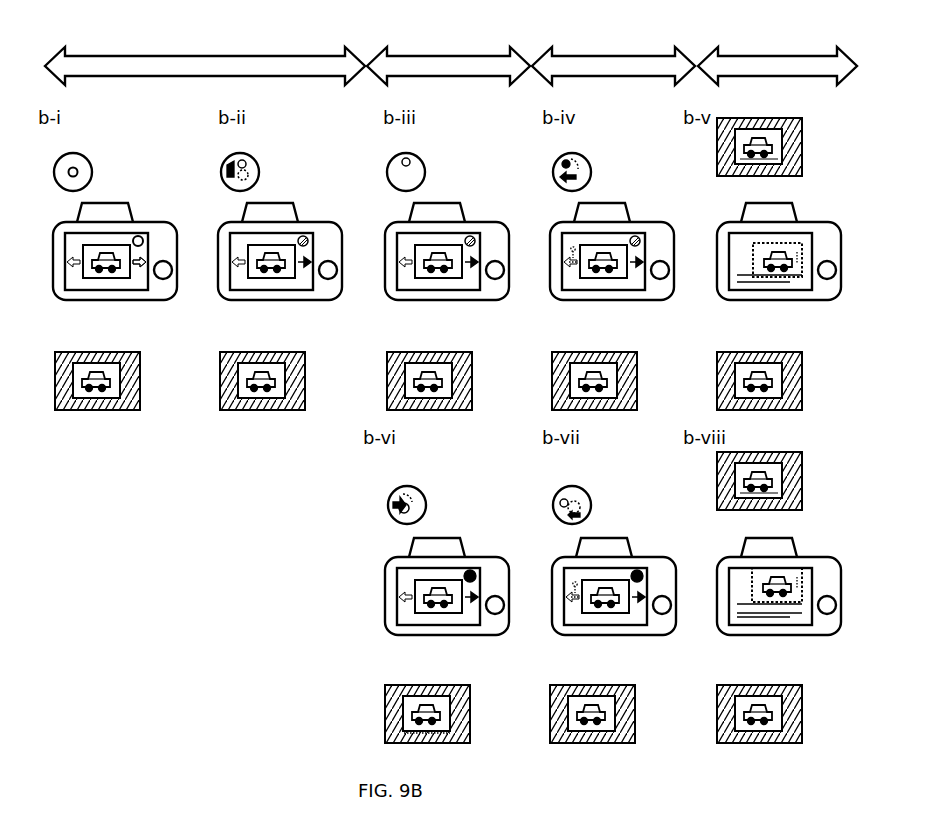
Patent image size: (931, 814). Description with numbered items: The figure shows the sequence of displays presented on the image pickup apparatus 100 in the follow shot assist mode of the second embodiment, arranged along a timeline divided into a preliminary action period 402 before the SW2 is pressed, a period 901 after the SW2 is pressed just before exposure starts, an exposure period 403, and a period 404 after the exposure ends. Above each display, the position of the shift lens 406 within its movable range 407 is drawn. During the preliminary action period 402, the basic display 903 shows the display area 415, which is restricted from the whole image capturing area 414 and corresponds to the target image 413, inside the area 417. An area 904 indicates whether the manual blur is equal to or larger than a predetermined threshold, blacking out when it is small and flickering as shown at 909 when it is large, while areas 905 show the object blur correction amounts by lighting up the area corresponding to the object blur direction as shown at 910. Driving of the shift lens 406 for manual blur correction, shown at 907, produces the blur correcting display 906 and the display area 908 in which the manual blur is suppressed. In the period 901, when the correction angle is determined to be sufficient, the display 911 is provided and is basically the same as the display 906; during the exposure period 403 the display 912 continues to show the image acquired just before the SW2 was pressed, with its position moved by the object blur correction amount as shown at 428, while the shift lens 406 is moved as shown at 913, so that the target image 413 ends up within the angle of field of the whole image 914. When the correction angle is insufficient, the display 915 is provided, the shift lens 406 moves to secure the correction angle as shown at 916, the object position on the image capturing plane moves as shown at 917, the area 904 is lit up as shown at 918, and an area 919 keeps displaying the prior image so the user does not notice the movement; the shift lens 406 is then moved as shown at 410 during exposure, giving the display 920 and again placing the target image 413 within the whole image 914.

The preliminary action period 402 is at (304, 57).
The period after the SW2 is pressed just before an exposure starts 901 is at (468, 57).
The exposure period 403 is at (634, 57).
The period after the exposure ends 404 is at (797, 57).
The shift lens 406 is at (71, 166).
The movable range 407 is at (88, 158).
The image pickup apparatus 100 is at (127, 212).
The area for displaying the display area 417 is at (80, 242).
The basic display 903 is at (148, 234).
The area 904 is at (145, 240).
The areas 905 is at (145, 265).
The whole image capturing area 414 is at (140, 355).
The display area 415 is at (121, 383).
The driving of the shift lens 907 is at (248, 160).
The blur correcting display 906 is at (312, 234).
The flickered area 909 is at (307, 236).
The lit area 910 is at (310, 264).
The display area 908 is at (304, 380).
The display 911 is at (481, 240).
The movement of the shift lens 913 is at (556, 165).
The moved display position 428 is at (571, 246).
The display 912 is at (640, 240).
The whole image 914 is at (812, 233).
The target image 413 is at (786, 130).
The movement of the shift lens 916 is at (412, 498).
The display 915 is at (480, 569).
The area 919 is at (402, 578).
The lit area 918 is at (473, 569).
The moved object position 917 is at (462, 710).
The movement of the shift lens 410 is at (558, 506).
The display 920 is at (641, 573).